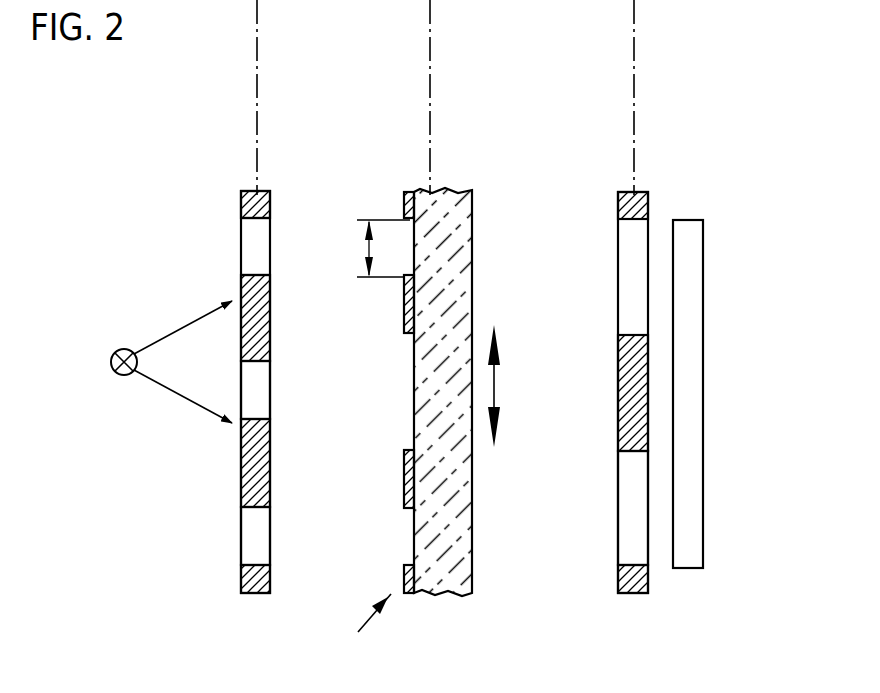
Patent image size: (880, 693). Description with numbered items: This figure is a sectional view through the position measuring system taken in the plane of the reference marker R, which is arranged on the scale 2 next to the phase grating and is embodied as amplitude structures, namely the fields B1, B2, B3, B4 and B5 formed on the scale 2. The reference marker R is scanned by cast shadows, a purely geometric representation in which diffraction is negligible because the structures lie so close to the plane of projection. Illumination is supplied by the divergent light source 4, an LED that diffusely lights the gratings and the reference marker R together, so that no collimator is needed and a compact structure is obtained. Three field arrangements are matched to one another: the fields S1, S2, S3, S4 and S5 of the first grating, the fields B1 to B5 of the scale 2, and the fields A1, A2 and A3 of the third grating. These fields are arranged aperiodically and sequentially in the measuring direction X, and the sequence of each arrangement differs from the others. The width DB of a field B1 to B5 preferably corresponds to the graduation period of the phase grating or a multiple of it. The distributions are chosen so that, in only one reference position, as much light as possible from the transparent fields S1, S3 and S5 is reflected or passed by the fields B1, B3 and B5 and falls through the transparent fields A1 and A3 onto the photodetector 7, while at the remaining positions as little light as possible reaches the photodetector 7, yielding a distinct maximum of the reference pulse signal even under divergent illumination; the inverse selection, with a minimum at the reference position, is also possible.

The scale 2 is at (470, 192).
The light source 4 is at (112, 360).
The photodetector 7 is at (695, 260).
The field S1 is at (245, 242).
The field S2 is at (243, 294).
The field S3 is at (243, 390).
The field S4 is at (243, 470).
The field S5 is at (243, 550).
The field B1 is at (410, 250).
The field B2 is at (405, 300).
The field B3 is at (410, 396).
The field B4 is at (405, 485).
The field B5 is at (405, 545).
The field A1 is at (628, 298).
The field A2 is at (625, 410).
The field A3 is at (625, 525).
The width of a field DB is at (360, 248).
The measuring direction X is at (506, 386).
The reference marker R is at (364, 613).